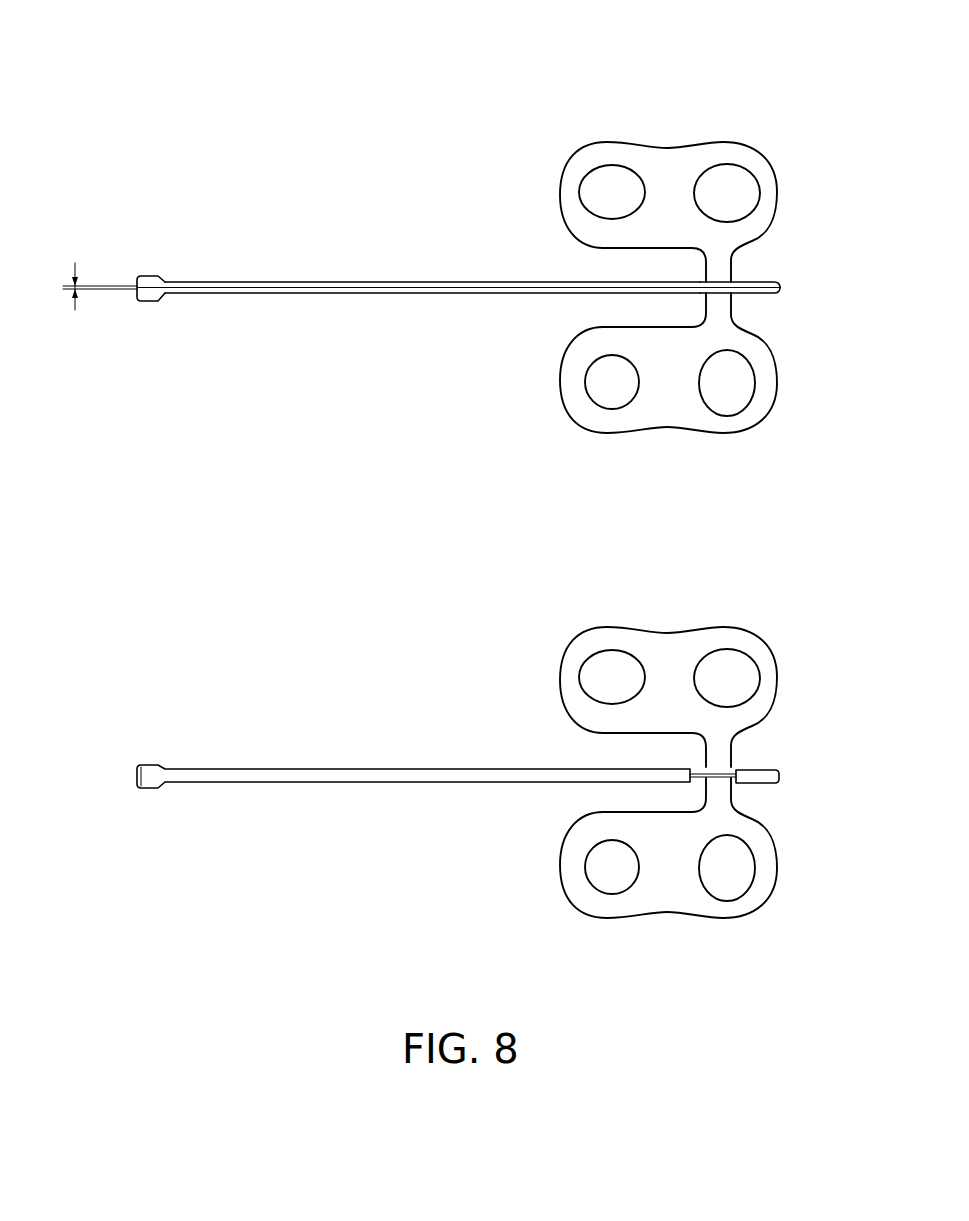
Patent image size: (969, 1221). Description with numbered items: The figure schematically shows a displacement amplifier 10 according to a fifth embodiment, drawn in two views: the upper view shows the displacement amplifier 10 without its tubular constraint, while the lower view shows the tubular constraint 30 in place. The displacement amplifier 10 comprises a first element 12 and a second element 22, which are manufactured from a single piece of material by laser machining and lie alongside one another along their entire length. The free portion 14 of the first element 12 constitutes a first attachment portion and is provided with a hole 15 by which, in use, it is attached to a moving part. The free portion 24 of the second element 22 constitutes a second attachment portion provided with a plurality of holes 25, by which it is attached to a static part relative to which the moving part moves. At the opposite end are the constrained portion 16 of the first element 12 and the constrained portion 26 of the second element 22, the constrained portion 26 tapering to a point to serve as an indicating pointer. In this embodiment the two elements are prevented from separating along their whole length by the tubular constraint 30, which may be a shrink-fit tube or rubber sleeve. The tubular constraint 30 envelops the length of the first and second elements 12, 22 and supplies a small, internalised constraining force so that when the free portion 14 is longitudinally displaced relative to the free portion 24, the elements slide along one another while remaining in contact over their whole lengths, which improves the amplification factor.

The displacement amplifier 10 is at (463, 500).
The first element 12 is at (265, 281).
The free portion of the first element 14 is at (797, 264).
The hole 15 is at (770, 183).
The constrained portion of the first element 16 is at (163, 258).
The second element 22 is at (265, 294).
The free portion of the second element 24 is at (781, 296).
The holes 25 is at (760, 407).
The constrained portion of the second element 26 is at (151, 288).
The tubular constraint 30 is at (210, 769).